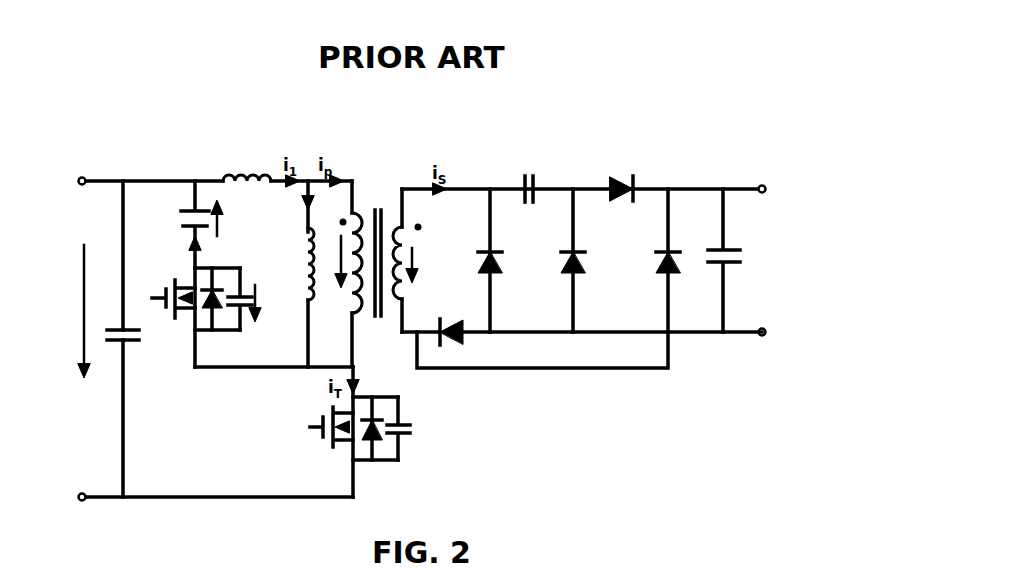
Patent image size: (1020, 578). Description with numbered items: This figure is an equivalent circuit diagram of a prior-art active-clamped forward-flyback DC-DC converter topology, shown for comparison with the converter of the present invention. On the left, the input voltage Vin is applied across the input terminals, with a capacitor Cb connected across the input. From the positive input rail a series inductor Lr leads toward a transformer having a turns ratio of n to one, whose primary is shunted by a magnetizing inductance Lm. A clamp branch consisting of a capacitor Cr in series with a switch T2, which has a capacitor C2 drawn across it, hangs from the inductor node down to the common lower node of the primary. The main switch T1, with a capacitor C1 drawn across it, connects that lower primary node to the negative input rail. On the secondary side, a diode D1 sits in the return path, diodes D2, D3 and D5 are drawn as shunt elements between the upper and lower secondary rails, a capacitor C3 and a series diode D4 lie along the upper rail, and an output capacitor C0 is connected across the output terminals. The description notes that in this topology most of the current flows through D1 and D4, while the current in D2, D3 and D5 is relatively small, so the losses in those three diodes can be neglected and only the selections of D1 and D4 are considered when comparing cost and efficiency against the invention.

The input voltage Vin is at (97, 311).
The bulk capacitor Cb is at (131, 357).
The resonant inductor Lr is at (247, 164).
The resonant capacitor Cr is at (195, 224).
The second transistor switch T2 is at (195, 317).
The second capacitor C2 is at (258, 308).
The magnetizing inductance Lm is at (288, 274).
The first transistor switch T1 is at (350, 432).
The first capacitor C1 is at (411, 428).
The diode D1 is at (446, 320).
The diode D2 is at (475, 260).
The diode D3 is at (558, 260).
The diode D4 is at (624, 202).
The diode D5 is at (653, 260).
The third capacitor C3 is at (520, 192).
The output capacitor C0 is at (716, 260).